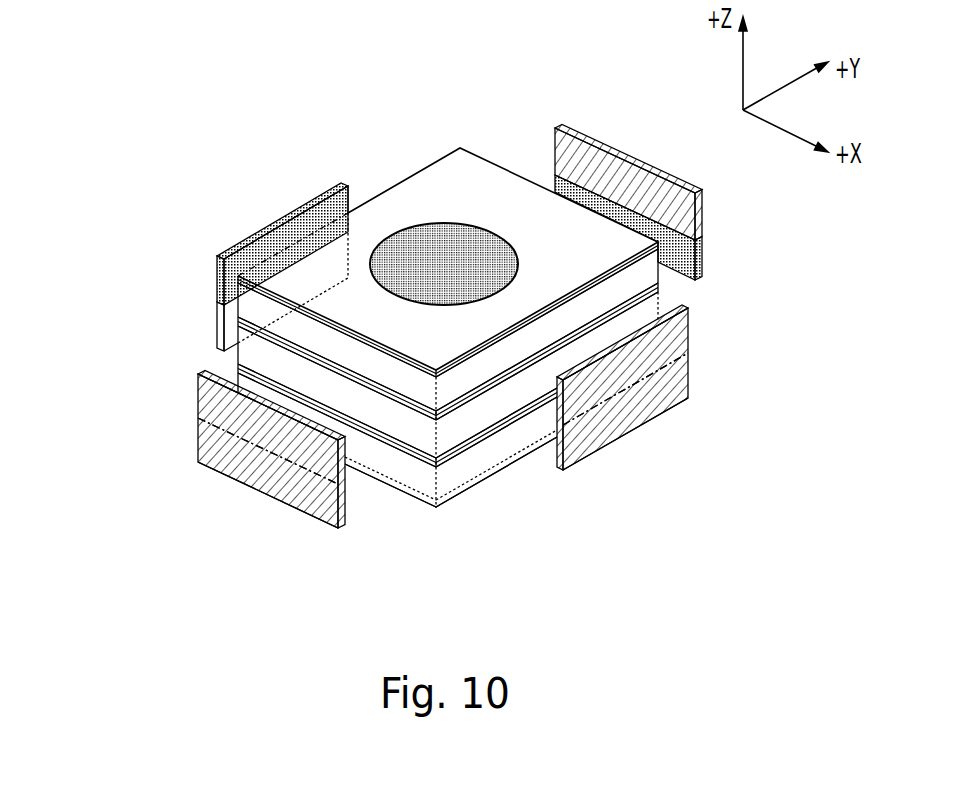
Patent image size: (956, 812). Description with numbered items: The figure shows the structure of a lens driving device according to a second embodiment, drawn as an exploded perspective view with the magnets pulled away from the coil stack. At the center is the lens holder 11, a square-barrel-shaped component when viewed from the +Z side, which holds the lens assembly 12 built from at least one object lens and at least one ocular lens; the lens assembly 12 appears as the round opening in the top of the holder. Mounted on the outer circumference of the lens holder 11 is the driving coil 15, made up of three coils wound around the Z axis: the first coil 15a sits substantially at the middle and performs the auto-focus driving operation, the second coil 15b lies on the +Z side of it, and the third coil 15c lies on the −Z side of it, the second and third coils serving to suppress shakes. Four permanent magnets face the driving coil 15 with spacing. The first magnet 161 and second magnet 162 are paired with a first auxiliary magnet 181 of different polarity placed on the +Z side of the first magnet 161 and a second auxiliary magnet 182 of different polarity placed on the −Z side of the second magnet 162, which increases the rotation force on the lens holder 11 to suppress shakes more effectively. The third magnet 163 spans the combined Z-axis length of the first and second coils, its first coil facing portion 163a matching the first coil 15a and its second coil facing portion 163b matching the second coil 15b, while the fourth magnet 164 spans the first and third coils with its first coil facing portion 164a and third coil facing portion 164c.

The lens holder 11 is at (428, 180).
The lens assembly 12 is at (423, 240).
The driving coil 15 is at (590, 558).
The first coil 15a is at (412, 433).
The second coil 15b is at (417, 383).
The third coil 15c is at (417, 482).
The first magnet 161 is at (220, 324).
The second magnet 162 is at (668, 215).
The third magnet 163 is at (797, 348).
The first coil facing portion 163a is at (657, 393).
The second coil facing portion 163b is at (658, 342).
The fourth magnet 164 is at (85, 412).
The first coil facing portion 164a is at (230, 402).
The third coil facing portion 164c is at (225, 444).
The first auxiliary magnet 181 is at (228, 252).
The second auxiliary magnet 182 is at (678, 267).